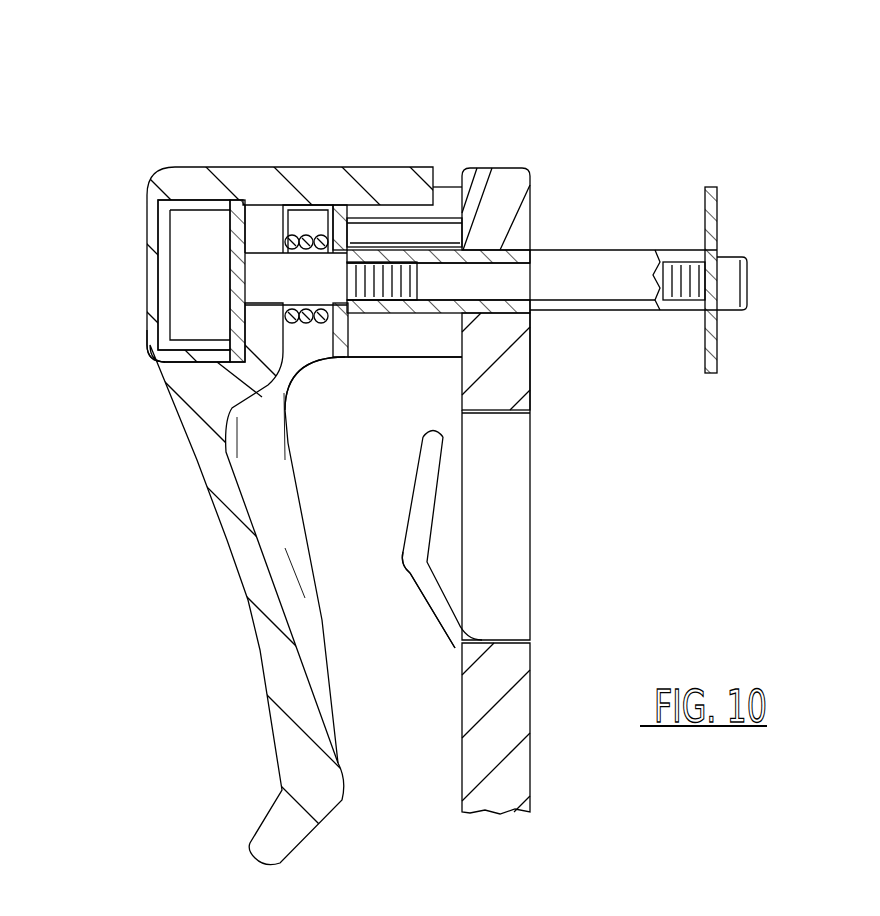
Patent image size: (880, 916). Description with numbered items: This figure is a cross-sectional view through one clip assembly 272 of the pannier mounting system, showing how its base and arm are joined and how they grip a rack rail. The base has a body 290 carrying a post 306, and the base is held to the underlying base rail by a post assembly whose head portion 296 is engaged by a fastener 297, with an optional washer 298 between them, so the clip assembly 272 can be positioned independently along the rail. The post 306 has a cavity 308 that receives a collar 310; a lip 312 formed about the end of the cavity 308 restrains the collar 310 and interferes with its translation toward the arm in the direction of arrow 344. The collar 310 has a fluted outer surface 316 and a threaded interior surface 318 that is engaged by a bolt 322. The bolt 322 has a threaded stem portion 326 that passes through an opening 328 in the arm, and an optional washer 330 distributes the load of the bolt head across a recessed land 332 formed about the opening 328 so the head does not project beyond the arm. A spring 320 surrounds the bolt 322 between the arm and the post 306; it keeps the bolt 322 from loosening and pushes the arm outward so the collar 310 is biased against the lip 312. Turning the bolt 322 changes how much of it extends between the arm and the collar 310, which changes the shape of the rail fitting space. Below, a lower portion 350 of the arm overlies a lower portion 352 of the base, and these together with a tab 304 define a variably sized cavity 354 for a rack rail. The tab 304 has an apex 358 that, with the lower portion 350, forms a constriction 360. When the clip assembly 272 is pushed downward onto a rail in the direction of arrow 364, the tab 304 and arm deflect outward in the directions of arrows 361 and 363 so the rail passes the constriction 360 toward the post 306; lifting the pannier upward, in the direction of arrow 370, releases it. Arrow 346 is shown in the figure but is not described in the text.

The clip assembly 272 is at (149, 85).
The body 290 is at (460, 400).
The head portion 296 is at (645, 253).
The fastener 297 is at (752, 270).
The washer 298 is at (712, 187).
The tab 304 is at (407, 505).
The post 306 is at (447, 187).
The cavity 308 is at (360, 250).
The collar 310 is at (380, 247).
The lip 312 is at (316, 215).
The fluted outer surface 316 is at (438, 277).
The threaded interior surface 318 is at (533, 183).
The spring 320 is at (307, 323).
The bolt 322 is at (162, 262).
The stem portion 326 is at (393, 313).
The opening 328 is at (153, 340).
The washer 330 is at (237, 200).
The land 332 is at (260, 268).
The arrow 344 is at (553, 103).
The direction of movement 346 is at (115, 387).
The lower portion of arm 350 is at (203, 527).
The lower portion of base 352 is at (537, 653).
The cavity 354 is at (393, 800).
The apex 358 is at (418, 570).
The constriction 360 is at (470, 648).
The arrow 361 is at (493, 480).
The arrow 363 is at (90, 455).
The arrow 364 is at (485, 72).
The arrow 370 is at (295, 40).